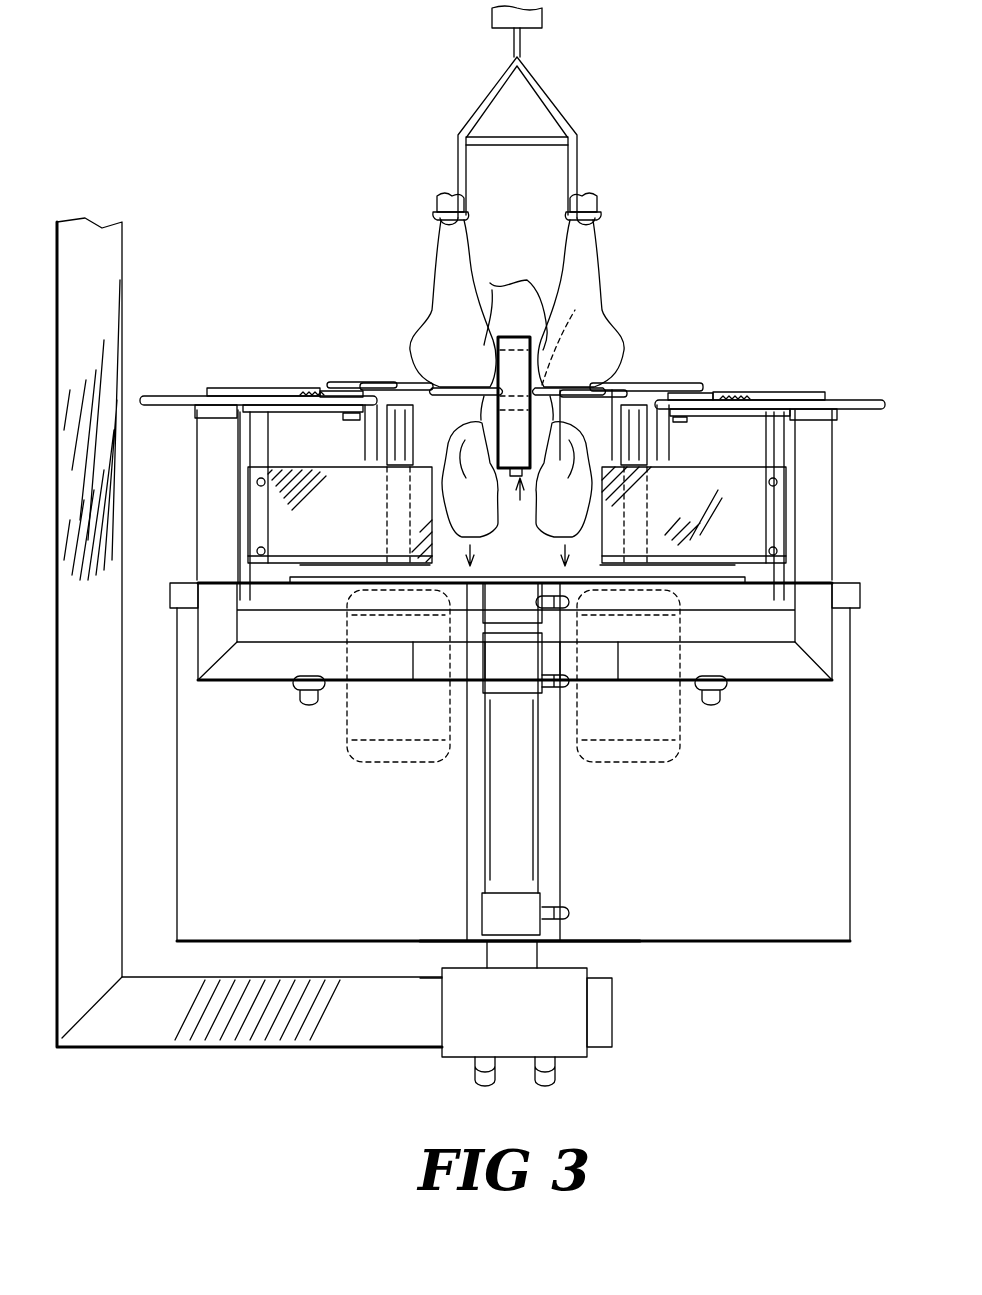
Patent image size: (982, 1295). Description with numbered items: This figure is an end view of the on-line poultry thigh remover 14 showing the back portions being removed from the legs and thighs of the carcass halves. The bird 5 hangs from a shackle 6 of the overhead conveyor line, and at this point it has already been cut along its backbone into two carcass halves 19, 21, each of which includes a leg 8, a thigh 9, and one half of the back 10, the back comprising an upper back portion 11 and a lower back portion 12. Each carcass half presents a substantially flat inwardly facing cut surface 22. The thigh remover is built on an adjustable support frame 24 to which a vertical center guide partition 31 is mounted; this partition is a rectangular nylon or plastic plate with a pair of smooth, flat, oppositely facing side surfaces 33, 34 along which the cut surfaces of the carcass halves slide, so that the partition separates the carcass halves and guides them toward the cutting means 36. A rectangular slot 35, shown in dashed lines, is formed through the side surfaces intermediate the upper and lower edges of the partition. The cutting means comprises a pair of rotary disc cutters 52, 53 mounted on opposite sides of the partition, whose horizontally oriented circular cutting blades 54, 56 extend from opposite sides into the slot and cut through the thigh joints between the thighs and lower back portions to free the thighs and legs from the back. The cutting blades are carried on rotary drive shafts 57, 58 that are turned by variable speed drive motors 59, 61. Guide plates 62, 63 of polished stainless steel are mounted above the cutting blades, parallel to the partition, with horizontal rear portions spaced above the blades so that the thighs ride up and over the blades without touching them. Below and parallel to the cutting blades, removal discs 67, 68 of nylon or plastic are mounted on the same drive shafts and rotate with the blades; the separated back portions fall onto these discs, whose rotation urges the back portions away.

The bird 5 is at (714, 210).
The shackle 6 is at (484, 90).
The legs 8 is at (440, 236).
The thighs 9 is at (490, 284).
The back 10 is at (440, 448).
The upper back portion 11 is at (545, 535).
The lower back portion 12 is at (478, 385).
The on-line poultry thigh remover 14 is at (849, 342).
The carcass half 19 is at (365, 326).
The carcass half 21 is at (664, 272).
The cut surface 22 is at (500, 338).
The adjustable support frame 24 is at (768, 668).
The vertical center guide partition 31 is at (516, 502).
The side surface 33 is at (470, 466).
The side surface 34 is at (564, 466).
The rectangular slot 35 is at (571, 336).
The cutting means 36 is at (662, 376).
The rotary disc cutter 52 is at (782, 380).
The rotary disc cutter 53 is at (304, 376).
The cutting blade 54 is at (458, 374).
The cutting blade 56 is at (575, 360).
The rotary drive shaft 57 is at (386, 508).
The rotary drive shaft 58 is at (640, 493).
The variable speed drive motor 59 is at (412, 722).
The variable speed drive motor 61 is at (642, 722).
The guide plate 62 is at (580, 368).
The guide plate 63 is at (447, 378).
The removal disc 67 is at (322, 560).
The removal disc 68 is at (690, 565).